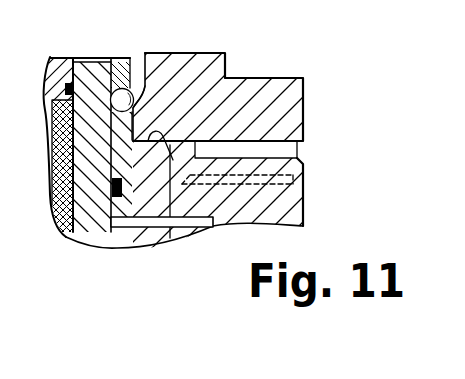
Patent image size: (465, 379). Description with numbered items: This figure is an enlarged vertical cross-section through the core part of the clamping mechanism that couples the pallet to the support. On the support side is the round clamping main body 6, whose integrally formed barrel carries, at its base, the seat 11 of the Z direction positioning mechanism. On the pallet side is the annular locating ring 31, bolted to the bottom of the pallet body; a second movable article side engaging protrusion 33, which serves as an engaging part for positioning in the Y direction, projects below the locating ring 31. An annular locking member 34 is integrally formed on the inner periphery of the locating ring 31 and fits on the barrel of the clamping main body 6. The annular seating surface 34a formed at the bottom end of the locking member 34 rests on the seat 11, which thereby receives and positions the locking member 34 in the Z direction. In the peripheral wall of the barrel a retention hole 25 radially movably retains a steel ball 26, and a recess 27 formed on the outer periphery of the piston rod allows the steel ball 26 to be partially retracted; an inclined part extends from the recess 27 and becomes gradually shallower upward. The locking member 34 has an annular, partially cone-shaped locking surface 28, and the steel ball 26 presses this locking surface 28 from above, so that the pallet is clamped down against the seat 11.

The clamping main body 6 is at (300, 203).
The seat 11 is at (173, 239).
The retention hole 25 is at (118, 80).
The steel ball 26 is at (131, 92).
The recess 27 is at (54, 162).
The locking surface 28 is at (147, 97).
The locating ring 31 is at (304, 103).
The second movable article side engaging protrusion 33 is at (300, 150).
The locking member 34 is at (170, 107).
The seating surface 34a is at (130, 239).